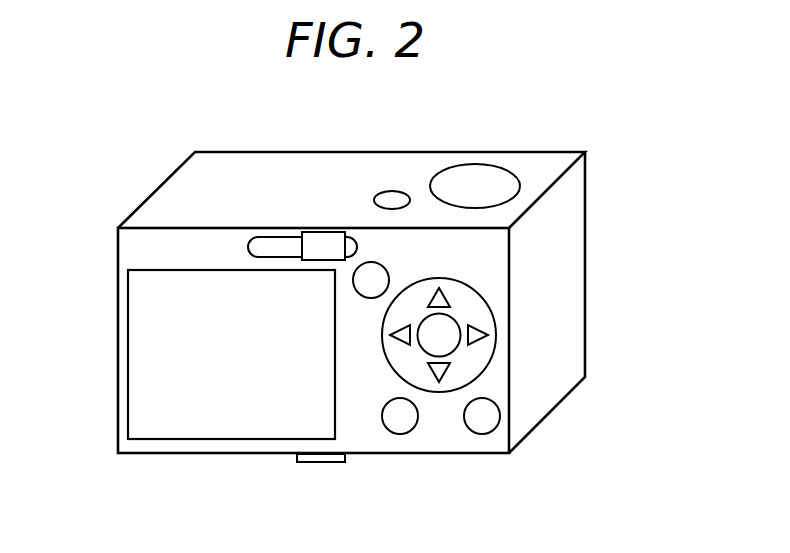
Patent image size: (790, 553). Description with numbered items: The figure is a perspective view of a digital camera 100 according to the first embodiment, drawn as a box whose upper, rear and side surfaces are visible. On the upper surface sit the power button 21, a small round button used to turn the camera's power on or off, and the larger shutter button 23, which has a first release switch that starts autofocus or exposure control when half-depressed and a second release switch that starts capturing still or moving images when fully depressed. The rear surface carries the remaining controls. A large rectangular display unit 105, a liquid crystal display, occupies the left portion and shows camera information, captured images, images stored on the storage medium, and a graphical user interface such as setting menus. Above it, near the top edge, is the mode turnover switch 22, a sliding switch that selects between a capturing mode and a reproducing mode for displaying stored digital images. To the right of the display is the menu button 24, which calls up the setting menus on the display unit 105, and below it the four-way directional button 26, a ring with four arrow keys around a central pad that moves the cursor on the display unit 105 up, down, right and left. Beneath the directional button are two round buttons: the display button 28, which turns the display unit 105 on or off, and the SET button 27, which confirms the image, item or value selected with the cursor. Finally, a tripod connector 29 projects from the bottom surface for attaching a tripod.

The digital camera 100 is at (232, 151).
The display unit 105 is at (127, 352).
The mode turnover switch 22 is at (324, 245).
The power button 21 is at (392, 200).
The shutter button 23 is at (475, 186).
The menu button 24 is at (387, 268).
The four-way directional button 26 is at (492, 312).
The SET button 27 is at (481, 425).
The display button 28 is at (398, 425).
The tripod connector 29 is at (322, 462).